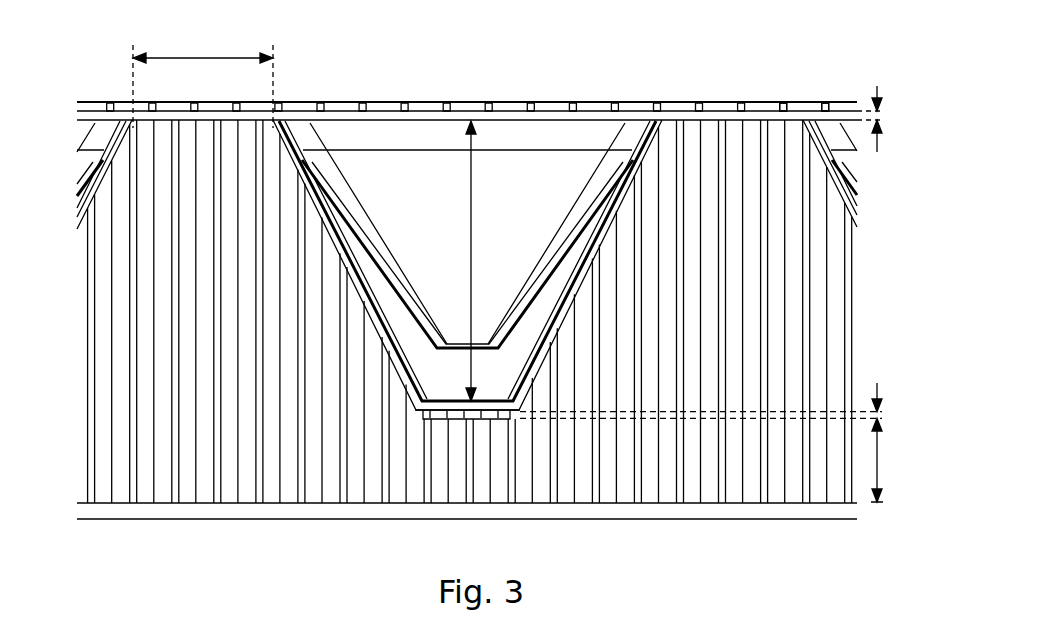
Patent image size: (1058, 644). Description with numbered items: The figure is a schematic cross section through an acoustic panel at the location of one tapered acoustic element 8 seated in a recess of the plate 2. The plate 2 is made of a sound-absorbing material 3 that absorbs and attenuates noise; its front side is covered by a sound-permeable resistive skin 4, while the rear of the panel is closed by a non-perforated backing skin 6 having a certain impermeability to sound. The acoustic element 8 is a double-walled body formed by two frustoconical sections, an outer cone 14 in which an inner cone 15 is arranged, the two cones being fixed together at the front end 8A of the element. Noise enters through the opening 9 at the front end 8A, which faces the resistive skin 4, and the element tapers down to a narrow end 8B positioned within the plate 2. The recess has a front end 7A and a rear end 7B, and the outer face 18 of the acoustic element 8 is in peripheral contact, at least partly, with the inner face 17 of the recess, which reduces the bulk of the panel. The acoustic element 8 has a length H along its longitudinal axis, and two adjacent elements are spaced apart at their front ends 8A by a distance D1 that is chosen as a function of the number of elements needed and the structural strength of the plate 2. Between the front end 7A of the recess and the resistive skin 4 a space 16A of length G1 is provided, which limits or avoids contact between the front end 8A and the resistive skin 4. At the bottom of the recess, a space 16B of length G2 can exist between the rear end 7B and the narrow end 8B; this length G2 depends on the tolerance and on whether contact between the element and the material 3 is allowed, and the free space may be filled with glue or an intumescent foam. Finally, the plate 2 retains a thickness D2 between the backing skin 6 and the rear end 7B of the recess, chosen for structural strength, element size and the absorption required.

The plate 2 is at (70, 463).
The sound-absorbing material 3 is at (122, 361).
The resistive skin 4 is at (797, 105).
The backing skin 6 is at (168, 518).
The front end of the recess 7A is at (505, 100).
The rear end of the recess 7B is at (440, 432).
The acoustic element 8 is at (410, 137).
The front end of the acoustic element 8A is at (330, 104).
The narrow end of the acoustic element 8B is at (404, 422).
The opening 9 is at (548, 100).
The outer cone 14 is at (637, 182).
The inner cone 15 is at (603, 172).
The space 16A is at (841, 96).
The space 16B is at (500, 424).
The inner face of the recess 17 is at (560, 268).
The outer face of the acoustic element 18 is at (600, 294).
The distance D1 is at (198, 53).
The length H is at (475, 232).
The length G1 is at (880, 115).
The length G2 is at (880, 415).
The thickness D2 is at (880, 460).